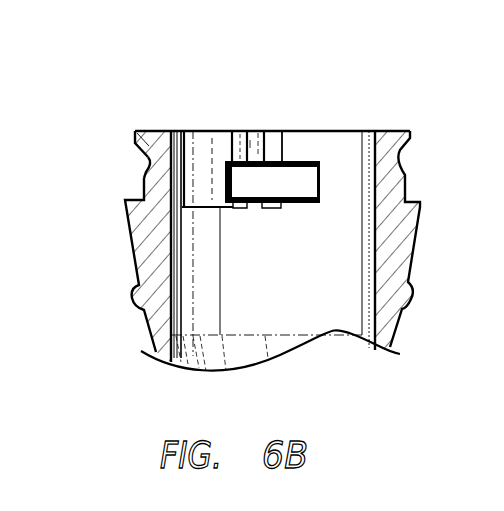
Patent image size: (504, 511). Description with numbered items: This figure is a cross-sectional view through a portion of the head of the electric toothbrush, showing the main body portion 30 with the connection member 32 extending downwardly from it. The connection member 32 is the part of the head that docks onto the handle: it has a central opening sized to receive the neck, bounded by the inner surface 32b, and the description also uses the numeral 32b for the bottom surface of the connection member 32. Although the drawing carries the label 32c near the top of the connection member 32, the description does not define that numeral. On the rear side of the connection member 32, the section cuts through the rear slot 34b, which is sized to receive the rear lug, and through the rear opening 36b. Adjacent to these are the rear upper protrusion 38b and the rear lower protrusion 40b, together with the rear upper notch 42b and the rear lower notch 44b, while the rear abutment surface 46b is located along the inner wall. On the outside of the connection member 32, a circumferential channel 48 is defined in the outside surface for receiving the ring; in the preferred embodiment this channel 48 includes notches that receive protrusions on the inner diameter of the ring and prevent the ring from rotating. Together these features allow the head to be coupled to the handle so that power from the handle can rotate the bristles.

The main body portion 30 is at (384, 328).
The connection member 32 is at (400, 143).
The inner surface 32b is at (352, 157).
The insert top wall 32c is at (377, 132).
The rear slot 34b is at (207, 140).
The rear opening 36b is at (303, 199).
The rear upper protrusion 38b is at (258, 211).
The rear lower protrusion 40b is at (248, 138).
The rear upper notch 42b is at (276, 211).
The rear lower notch 44b is at (275, 140).
The rear abutment surface 46b is at (192, 208).
The circumferential channel 48 is at (147, 167).